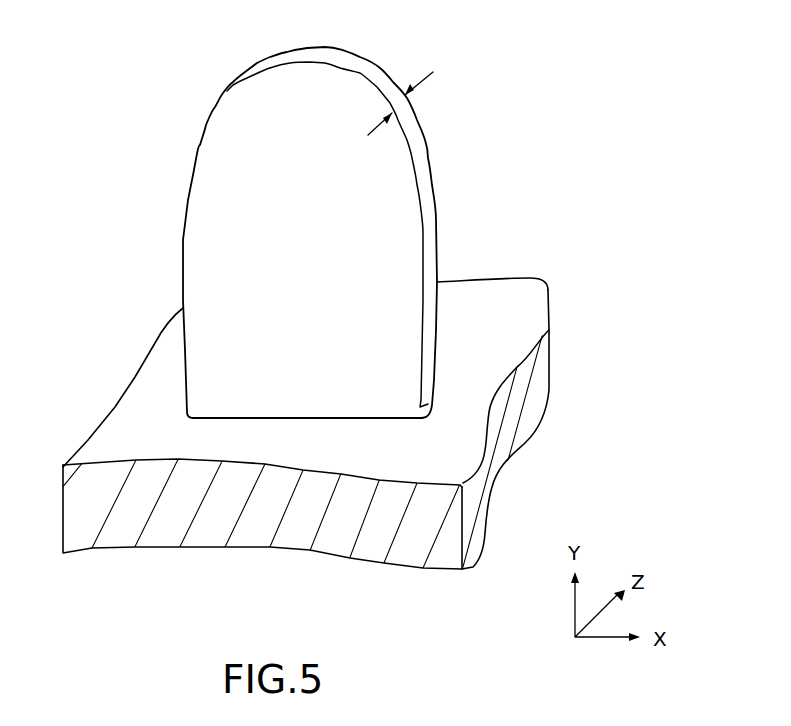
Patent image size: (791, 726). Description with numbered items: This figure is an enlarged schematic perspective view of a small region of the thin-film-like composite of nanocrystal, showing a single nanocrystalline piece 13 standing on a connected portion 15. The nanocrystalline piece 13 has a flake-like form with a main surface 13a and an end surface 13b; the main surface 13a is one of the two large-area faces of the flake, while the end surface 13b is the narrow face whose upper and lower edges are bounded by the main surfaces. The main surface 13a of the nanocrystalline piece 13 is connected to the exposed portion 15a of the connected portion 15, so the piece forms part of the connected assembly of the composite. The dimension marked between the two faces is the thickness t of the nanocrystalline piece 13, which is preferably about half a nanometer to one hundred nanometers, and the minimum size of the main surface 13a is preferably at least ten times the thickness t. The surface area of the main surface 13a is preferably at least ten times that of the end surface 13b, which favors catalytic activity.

The nanocrystalline piece 13 is at (435, 213).
The main surface of the nanocrystalline piece 13a is at (228, 199).
The end surface of the nanocrystalline piece 13b is at (293, 418).
The connected portion 15 is at (95, 520).
The exposed portion of the connected portion 15a is at (130, 440).
The thickness of the nanocrystalline piece t is at (412, 112).